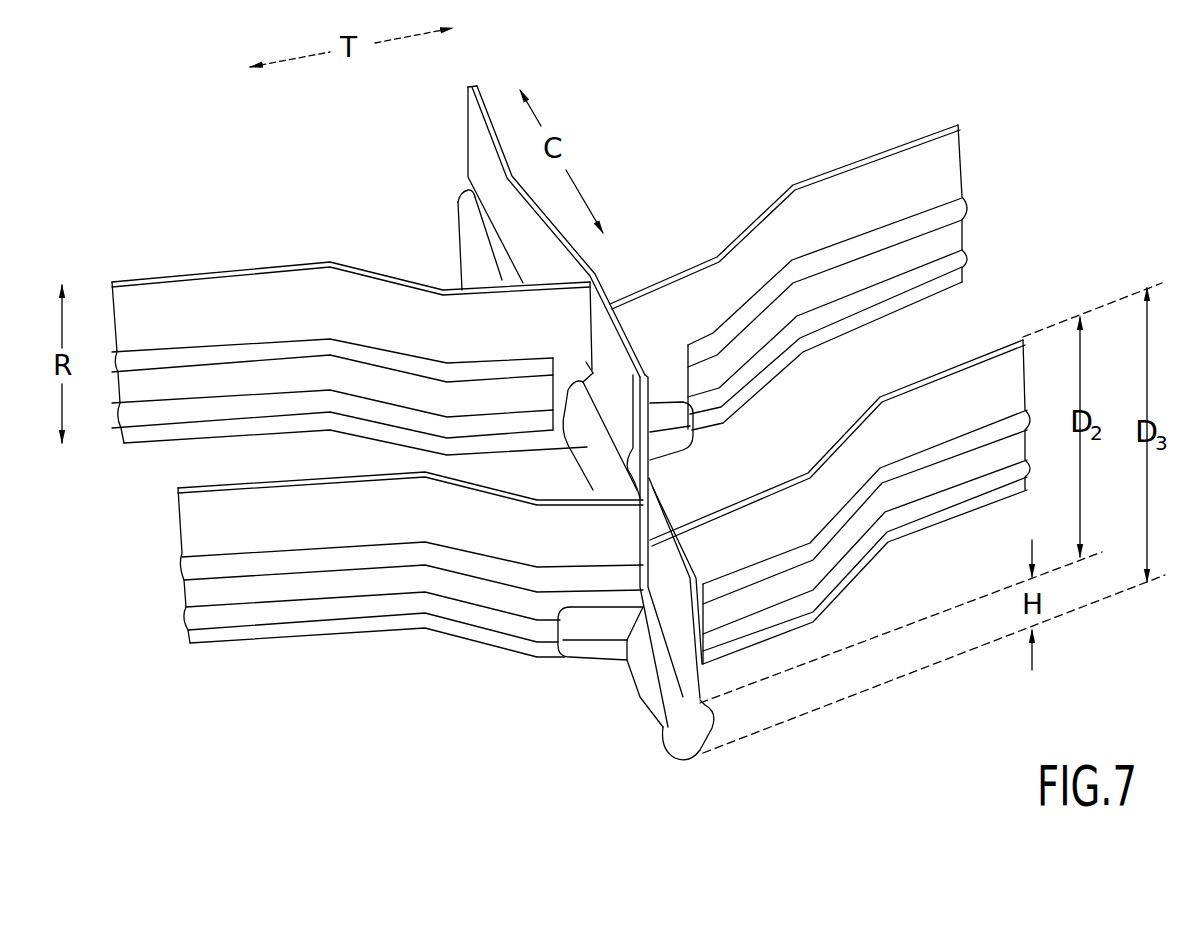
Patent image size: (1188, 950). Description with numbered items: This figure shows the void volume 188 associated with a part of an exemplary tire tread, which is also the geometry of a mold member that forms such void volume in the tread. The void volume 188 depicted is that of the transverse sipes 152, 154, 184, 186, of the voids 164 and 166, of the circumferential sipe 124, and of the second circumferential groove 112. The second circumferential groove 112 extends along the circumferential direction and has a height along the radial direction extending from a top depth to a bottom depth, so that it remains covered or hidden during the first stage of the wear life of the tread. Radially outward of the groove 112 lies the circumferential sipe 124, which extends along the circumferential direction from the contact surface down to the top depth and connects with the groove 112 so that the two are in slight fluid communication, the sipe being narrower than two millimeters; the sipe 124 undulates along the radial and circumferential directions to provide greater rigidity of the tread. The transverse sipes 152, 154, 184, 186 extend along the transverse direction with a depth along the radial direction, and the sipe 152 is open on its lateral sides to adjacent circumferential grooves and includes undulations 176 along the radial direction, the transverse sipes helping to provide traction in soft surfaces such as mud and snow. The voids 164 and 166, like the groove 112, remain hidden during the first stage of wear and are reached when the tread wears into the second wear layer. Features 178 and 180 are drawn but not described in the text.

The second circumferential groove 112 is at (462, 253).
The circumferential sipe 124 is at (473, 85).
The transverse sipe 152 is at (235, 518).
The transverse sipe 154 is at (907, 180).
The void 164 is at (582, 653).
The void 166 is at (660, 417).
The undulations 176 is at (203, 610).
The louvers of fin 154 178 is at (940, 248).
The clip 180 is at (462, 200).
The transverse sipe 184 is at (245, 281).
The transverse sipe 186 is at (945, 350).
The void volume 188 is at (768, 83).